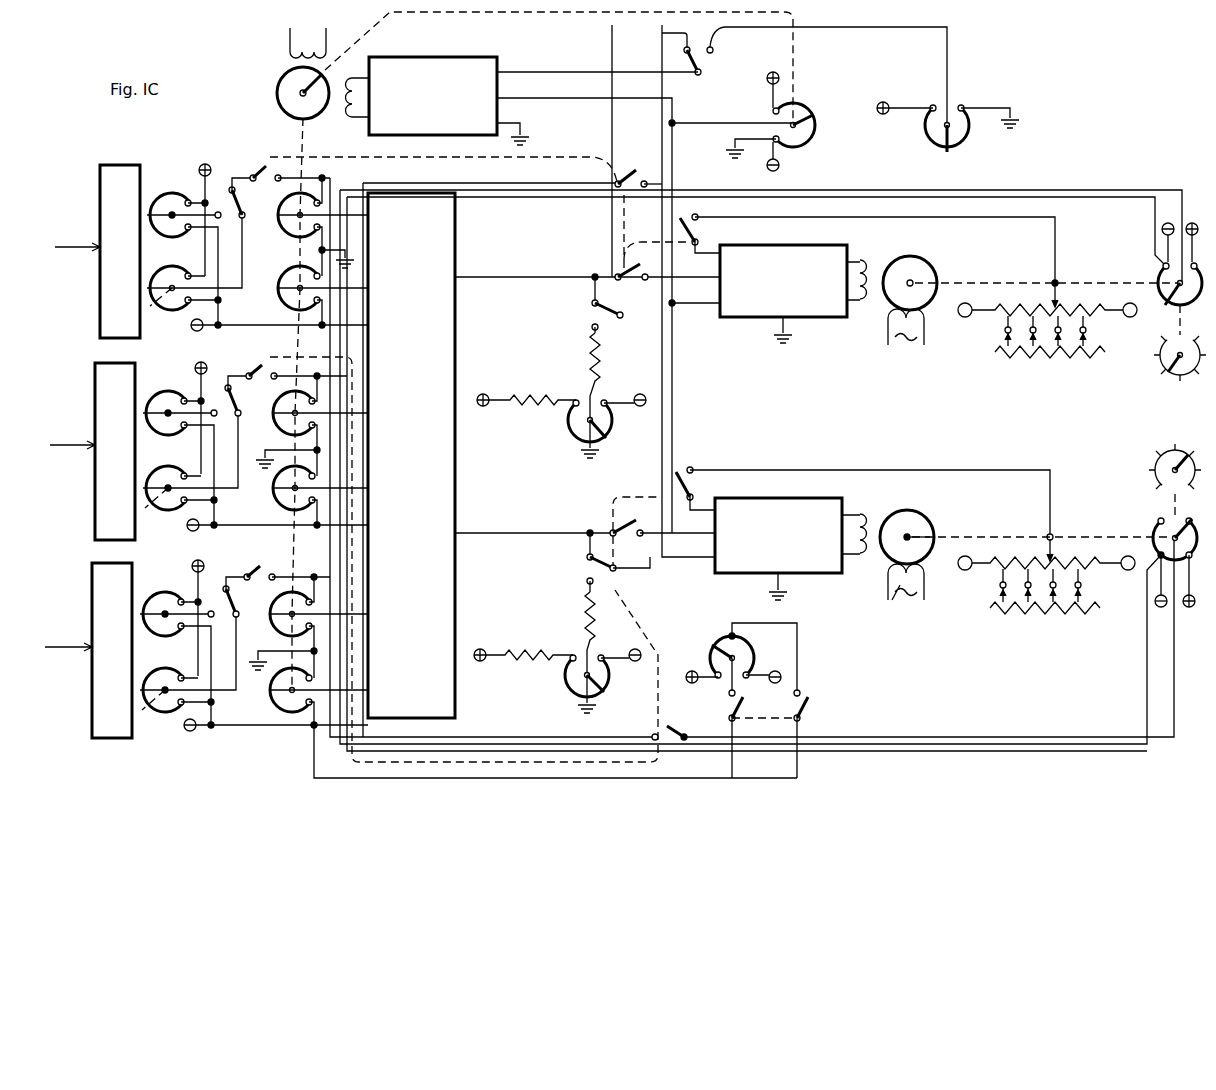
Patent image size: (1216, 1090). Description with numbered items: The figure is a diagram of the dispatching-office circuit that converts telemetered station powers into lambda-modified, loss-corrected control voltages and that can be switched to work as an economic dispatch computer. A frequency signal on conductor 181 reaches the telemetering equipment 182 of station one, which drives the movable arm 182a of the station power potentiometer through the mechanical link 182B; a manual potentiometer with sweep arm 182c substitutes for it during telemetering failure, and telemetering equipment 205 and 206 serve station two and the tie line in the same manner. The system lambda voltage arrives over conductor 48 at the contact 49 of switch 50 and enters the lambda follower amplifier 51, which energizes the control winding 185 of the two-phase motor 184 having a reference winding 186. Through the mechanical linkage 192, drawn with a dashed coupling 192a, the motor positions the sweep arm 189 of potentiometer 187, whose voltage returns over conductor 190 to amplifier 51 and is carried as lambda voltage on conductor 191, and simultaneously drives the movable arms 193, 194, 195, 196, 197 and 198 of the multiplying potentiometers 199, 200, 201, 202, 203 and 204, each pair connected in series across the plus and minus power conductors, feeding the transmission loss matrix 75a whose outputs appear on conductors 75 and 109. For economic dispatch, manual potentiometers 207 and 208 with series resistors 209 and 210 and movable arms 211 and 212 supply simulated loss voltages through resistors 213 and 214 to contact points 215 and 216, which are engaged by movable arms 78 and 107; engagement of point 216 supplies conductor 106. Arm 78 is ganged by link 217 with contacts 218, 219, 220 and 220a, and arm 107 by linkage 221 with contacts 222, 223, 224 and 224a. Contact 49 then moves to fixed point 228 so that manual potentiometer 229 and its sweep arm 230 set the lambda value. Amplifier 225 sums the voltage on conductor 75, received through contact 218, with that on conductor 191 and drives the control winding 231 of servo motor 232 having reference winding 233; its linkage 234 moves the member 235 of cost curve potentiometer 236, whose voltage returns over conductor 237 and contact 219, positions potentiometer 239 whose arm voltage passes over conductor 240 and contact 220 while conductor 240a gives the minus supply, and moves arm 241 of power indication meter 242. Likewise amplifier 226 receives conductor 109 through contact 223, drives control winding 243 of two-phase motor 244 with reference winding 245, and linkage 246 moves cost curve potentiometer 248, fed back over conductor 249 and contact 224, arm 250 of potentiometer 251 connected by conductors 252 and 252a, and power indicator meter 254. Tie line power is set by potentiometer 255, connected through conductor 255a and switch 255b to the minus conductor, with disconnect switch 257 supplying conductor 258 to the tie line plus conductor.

The conductor 48 is at (660, 34).
The movable contact member 49 is at (682, 61).
The switch 50 is at (704, 52).
The lambda follower amplifier 51 is at (418, 58).
The output conductor 75 is at (506, 277).
The transmission loss matrix 75a is at (455, 214).
The movable arm 78 is at (588, 308).
The conductor 106 is at (660, 58).
The movable arm 107 is at (612, 578).
The conductor 109 is at (484, 533).
The conductor 181 is at (58, 247).
The telemetering equipment 182 is at (112, 167).
The movable arm 182a is at (185, 254).
The mechanical link 182B is at (254, 326).
The sweep arm 182c is at (172, 186).
The two-phase motor 184 is at (283, 86).
The control winding 185 is at (345, 107).
The reference winding 186 is at (308, 43).
The potentiometer 187 is at (810, 140).
The movable sweep arm 189 is at (816, 128).
The conductor 190 is at (524, 103).
The conductor 191 is at (674, 160).
The mechanical linkage 192 is at (300, 138).
The shaft coupling 192a is at (500, 12).
The movable arm 193 is at (278, 215).
The movable arm 194 is at (278, 288).
The movable arm 195 is at (275, 418).
The movable arm 196 is at (273, 492).
The movable arm 197 is at (272, 618).
The movable arm 198 is at (270, 696).
The lambda follower multiplying potentiometer 199 is at (317, 200).
The lambda follower multiplying potentiometer 200 is at (282, 305).
The lambda follower multiplying potentiometer 201 is at (316, 404).
The lambda follower multiplying potentiometer 202 is at (280, 508).
The lambda follower multiplying potentiometer 203 is at (298, 592).
The lambda follower multiplying potentiometer 204 is at (280, 722).
The telemetering equipment 205 is at (120, 372).
The telemetering equipment 206 is at (118, 572).
The manual potentiometer 207 is at (568, 436).
The manual potentiometer 208 is at (560, 678).
The series resistor 209 is at (522, 406).
The series resistor 210 is at (520, 652).
The movable arm 211 is at (612, 438).
The movable arm 212 is at (610, 690).
The series resistor 213 is at (600, 372).
The series resistor 214 is at (582, 626).
The contact point 215 is at (590, 330).
The contact point 216 is at (586, 578).
The mechanical link 217 is at (468, 162).
The movable contact member 218 is at (618, 274).
The contact 219 is at (698, 240).
The contact 220 is at (630, 170).
The contact 220a is at (264, 172).
The mechanical linkage 221 is at (455, 760).
The contact member 222 is at (672, 730).
The contact 223 is at (608, 522).
The contact member 224 is at (694, 492).
The contact 224a is at (258, 372).
The control summing amplifier 225 is at (762, 248).
The control summing amplifier 226 is at (746, 500).
The fixed contact point 228 is at (827, 76).
The manual potentiometer 229 is at (966, 142).
The movable sweep arm 230 is at (929, 148).
The control winding 231 is at (868, 268).
The servo motor 232 is at (908, 258).
The reference winding 233 is at (888, 338).
The mechanical linkage 234 is at (970, 282).
The movable member 235 is at (1058, 300).
The non-linear cost curve potentiometer 236 is at (1006, 332).
The conductor 237 is at (812, 218).
The potentiometer 239 is at (1160, 284).
The conductor 240 is at (1044, 192).
The conductor 240a is at (1044, 198).
The movable arm 241 is at (1162, 370).
The power indication meter 242 is at (1160, 344).
The control winding 243 is at (863, 523).
The two-phase motor 244 is at (919, 530).
The reference winding 245 is at (906, 593).
The mechanical linkage 246 is at (1054, 536).
The non-linear cost curve potentiometer 248 is at (1000, 586).
The conductor 249 is at (850, 476).
The movable arm 250 is at (1170, 518).
The potentiometer 251 is at (1152, 526).
The conductor 252 is at (1150, 660).
The conductor 252a is at (1147, 706).
The power indicator meter 254 is at (1154, 460).
The potentiometer 255 is at (738, 646).
The conductor 255a is at (800, 760).
The switch 255b is at (804, 706).
The disconnect switch 257 is at (763, 734).
The conductor 258 is at (716, 748).